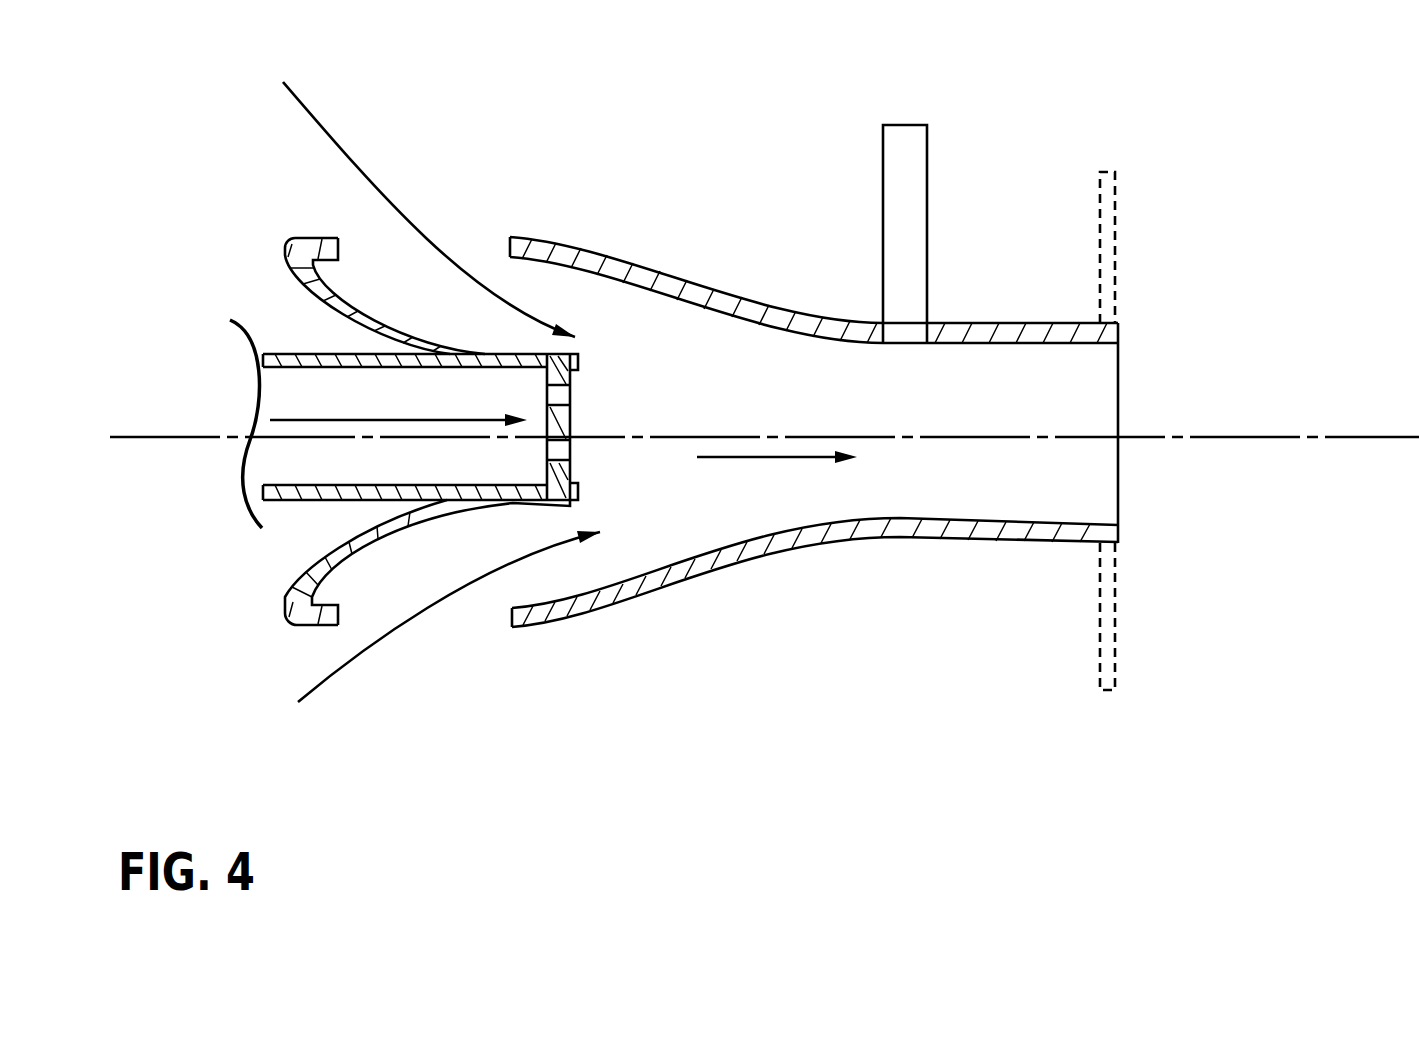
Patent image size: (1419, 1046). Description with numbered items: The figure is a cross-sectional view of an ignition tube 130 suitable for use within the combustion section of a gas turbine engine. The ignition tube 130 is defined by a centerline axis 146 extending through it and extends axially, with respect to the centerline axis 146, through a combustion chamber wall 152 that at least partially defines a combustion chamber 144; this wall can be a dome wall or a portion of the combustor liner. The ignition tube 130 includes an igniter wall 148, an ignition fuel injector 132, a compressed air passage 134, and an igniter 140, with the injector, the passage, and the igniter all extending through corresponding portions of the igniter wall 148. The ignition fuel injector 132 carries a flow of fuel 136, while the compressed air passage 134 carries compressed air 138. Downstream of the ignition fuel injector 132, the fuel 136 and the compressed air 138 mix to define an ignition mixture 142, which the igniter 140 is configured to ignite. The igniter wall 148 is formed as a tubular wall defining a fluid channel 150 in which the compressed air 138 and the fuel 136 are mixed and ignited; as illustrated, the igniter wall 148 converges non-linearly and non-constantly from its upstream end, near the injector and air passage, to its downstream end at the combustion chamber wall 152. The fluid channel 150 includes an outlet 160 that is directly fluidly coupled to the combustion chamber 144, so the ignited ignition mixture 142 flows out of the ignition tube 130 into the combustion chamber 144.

The ignition tube 130 is at (784, 370).
The ignition fuel injector 132 is at (303, 355).
The compressed air passage 134 is at (490, 243).
The fuel 136 is at (355, 422).
The compressed air 138 is at (395, 207).
The igniter 140 is at (882, 237).
The ignition mixture 142 is at (777, 458).
The combustion chamber 144 is at (1290, 353).
The centerline axis 146 is at (1312, 435).
The igniter wall 148 is at (905, 535).
The fluid channel 150 is at (1040, 403).
The combustion chamber wall 152 is at (1115, 247).
The outlet 160 is at (1122, 408).